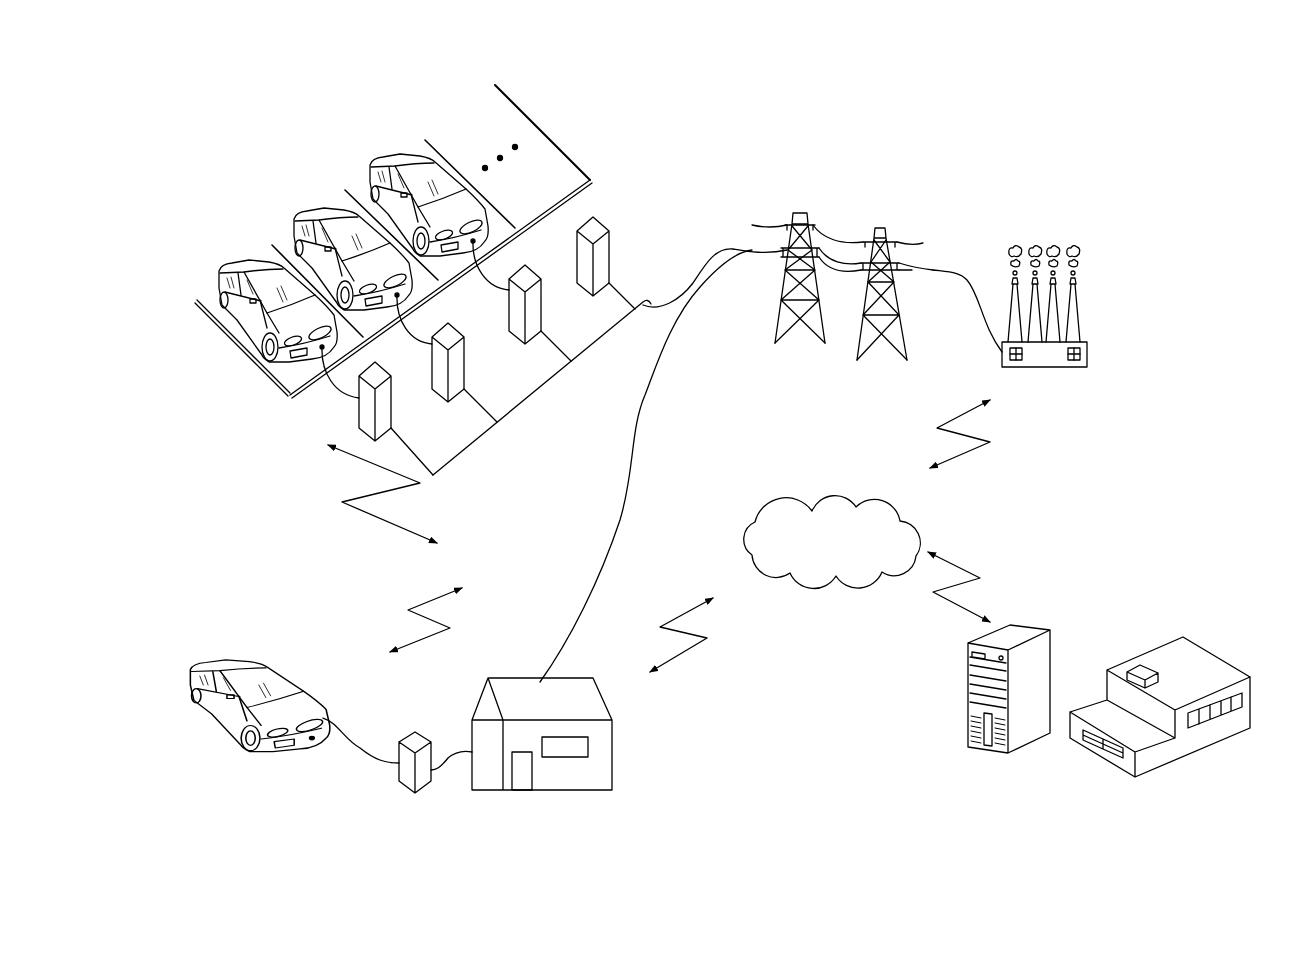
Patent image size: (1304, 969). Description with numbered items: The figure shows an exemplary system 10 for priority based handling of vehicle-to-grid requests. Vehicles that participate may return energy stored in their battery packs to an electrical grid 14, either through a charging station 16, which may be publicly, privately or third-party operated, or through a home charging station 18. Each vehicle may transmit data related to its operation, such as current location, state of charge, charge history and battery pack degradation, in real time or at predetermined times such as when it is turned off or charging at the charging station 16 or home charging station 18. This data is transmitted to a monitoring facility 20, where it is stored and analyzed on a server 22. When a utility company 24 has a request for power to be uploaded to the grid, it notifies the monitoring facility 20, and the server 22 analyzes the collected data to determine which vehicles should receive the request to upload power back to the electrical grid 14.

The system 10 is at (1206, 122).
The electrical grid 14 is at (850, 219).
The charging station 16 is at (617, 206).
The home charging station 18 is at (393, 799).
The monitoring facility 20 is at (1178, 752).
The server 22 is at (990, 755).
The utility company 24 is at (1078, 313).